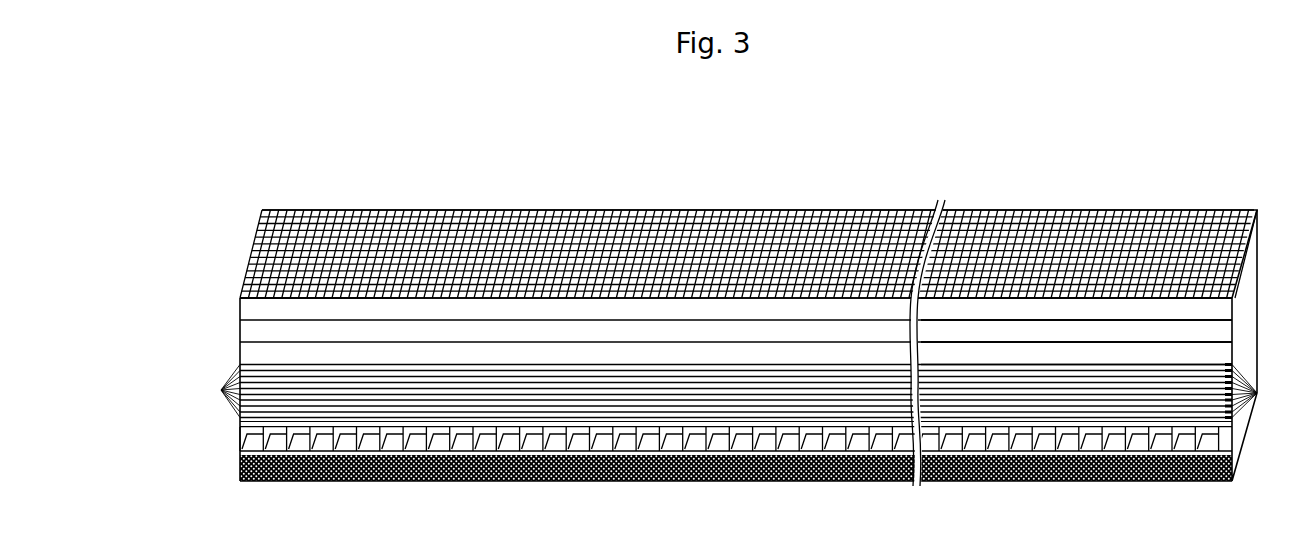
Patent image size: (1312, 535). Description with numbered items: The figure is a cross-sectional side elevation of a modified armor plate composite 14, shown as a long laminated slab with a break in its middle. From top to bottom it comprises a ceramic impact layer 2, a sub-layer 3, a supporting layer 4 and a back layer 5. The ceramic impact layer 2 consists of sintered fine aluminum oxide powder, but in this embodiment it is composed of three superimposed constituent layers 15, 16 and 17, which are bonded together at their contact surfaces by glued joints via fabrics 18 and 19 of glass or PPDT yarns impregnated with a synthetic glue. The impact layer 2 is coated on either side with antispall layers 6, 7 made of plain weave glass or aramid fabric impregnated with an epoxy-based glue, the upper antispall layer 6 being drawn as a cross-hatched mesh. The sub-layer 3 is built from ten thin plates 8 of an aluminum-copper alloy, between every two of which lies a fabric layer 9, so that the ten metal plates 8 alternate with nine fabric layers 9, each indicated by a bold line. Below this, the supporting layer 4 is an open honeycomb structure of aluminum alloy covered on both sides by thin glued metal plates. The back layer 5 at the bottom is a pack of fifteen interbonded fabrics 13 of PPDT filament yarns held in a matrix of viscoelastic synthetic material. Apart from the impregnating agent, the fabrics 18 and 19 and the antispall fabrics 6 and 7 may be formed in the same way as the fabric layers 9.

The ceramic impact layer 2 is at (746, 331).
The sub-layer 3 is at (730, 384).
The supporting layer 4 is at (238, 423).
The back layer 5 is at (238, 457).
The antispall layer 6 is at (246, 294).
The antispall layer 7 is at (262, 364).
The metal plate 8 is at (1275, 393).
The fabric layer 9 is at (211, 390).
The fabric 13 is at (1191, 481).
The armor plate composite 14 is at (691, 205).
The constituent layer 15 is at (1218, 312).
The constituent layer 16 is at (1218, 332).
The constituent layer 17 is at (1218, 354).
The fabric 18 is at (325, 320).
The fabric 19 is at (361, 342).